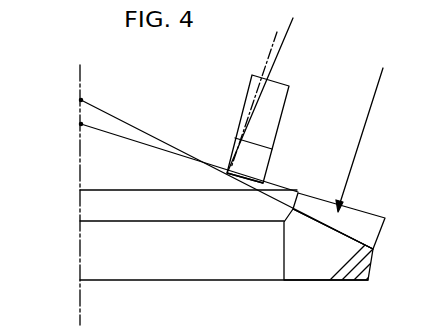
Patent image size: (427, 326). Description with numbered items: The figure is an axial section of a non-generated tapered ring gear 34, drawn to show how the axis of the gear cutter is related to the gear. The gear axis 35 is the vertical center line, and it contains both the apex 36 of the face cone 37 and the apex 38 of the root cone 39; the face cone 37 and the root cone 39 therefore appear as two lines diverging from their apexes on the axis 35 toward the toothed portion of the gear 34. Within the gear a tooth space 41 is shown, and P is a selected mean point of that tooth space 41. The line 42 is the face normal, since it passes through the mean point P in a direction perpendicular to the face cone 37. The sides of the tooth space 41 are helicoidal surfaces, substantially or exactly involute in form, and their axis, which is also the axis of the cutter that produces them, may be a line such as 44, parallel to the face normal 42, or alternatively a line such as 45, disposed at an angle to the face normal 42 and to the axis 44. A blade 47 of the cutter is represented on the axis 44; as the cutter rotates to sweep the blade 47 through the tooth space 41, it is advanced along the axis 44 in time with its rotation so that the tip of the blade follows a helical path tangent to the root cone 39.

The tapered ring gear 34 is at (353, 270).
The gear axis 35 is at (80, 268).
The apex of face cone 36 is at (80, 123).
The face cone 37 is at (272, 180).
The apex of root cone 38 is at (82, 98).
The root cone 39 is at (275, 203).
The gear tooth space 41 is at (360, 211).
The face normal 42 is at (359, 143).
The cutter axis 44 is at (270, 52).
The inclined cutter axis 45 is at (283, 43).
The cutter blade 47 is at (273, 118).
The mean point P is at (337, 210).